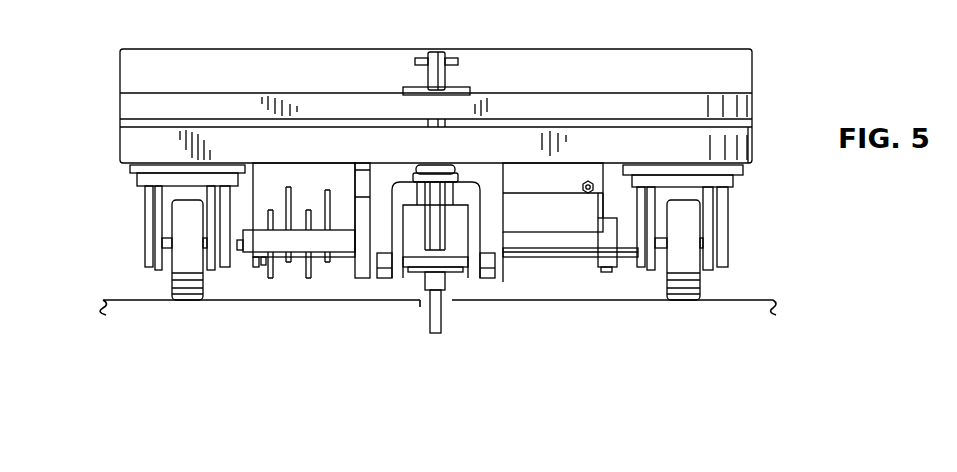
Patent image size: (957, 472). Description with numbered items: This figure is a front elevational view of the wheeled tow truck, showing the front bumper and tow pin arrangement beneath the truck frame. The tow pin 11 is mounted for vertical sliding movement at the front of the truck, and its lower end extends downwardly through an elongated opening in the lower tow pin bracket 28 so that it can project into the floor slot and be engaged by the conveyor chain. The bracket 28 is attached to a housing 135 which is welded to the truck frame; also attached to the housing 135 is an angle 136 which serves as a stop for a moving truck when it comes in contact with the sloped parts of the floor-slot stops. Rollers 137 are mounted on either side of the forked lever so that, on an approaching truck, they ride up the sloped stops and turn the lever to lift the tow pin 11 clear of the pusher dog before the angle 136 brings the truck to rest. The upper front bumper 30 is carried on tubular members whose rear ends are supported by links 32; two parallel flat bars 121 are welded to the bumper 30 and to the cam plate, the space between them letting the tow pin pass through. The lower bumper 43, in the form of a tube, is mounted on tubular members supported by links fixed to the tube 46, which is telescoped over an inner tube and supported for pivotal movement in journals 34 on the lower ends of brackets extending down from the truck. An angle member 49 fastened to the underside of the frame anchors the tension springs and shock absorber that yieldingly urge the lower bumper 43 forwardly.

The tow pin 11 is at (427, 80).
The upper front bumper 30 is at (740, 108).
The lower bumper 43 is at (740, 155).
The links 32 is at (148, 212).
The flat bars 121 is at (234, 222).
The housing 135 is at (367, 258).
The rollers 137 is at (380, 282).
The lower tow pin bracket 28 is at (418, 262).
The angle 136 is at (458, 281).
The tube 46 is at (580, 255).
The journals 34 is at (617, 270).
The angle member 49 is at (532, 188).